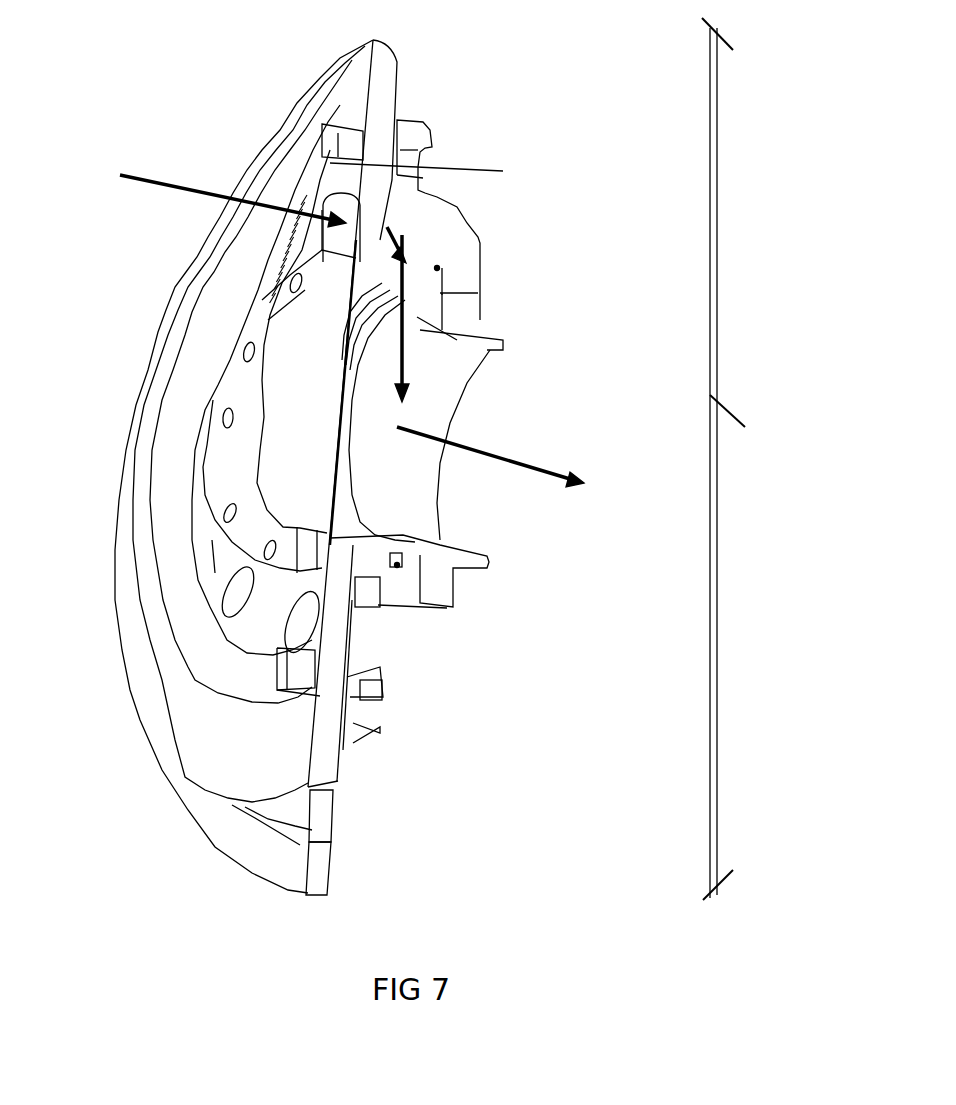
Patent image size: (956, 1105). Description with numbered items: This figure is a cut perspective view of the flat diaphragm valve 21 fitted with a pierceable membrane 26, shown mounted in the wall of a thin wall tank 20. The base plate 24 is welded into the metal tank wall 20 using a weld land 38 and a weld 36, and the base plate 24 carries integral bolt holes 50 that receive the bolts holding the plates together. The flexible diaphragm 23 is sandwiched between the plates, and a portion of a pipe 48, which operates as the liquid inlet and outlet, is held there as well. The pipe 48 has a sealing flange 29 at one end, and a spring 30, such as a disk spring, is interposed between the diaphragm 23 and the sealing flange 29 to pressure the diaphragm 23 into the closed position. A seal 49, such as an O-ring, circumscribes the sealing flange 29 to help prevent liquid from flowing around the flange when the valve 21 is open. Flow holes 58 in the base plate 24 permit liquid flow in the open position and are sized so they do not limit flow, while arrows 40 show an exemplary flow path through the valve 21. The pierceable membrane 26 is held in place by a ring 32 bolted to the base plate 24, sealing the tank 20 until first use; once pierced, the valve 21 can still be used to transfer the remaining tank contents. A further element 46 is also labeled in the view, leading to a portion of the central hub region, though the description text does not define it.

The tank 20 is at (320, 865).
The valve 21 is at (767, 459).
The diaphragm 23 is at (360, 167).
The base plate 24 is at (212, 772).
The pierceable membrane 26 is at (280, 453).
The sealing flange 29 is at (442, 293).
The spring 30 is at (420, 302).
The ring 32 is at (277, 297).
The weld 36 is at (330, 842).
The weld land 38 is at (297, 822).
The arrows 40 is at (138, 183).
The hub 46 is at (370, 597).
The pipe 48 is at (427, 453).
The seal 49 is at (437, 268).
The bolt holes 50 is at (340, 138).
The flow holes 58 is at (237, 593).